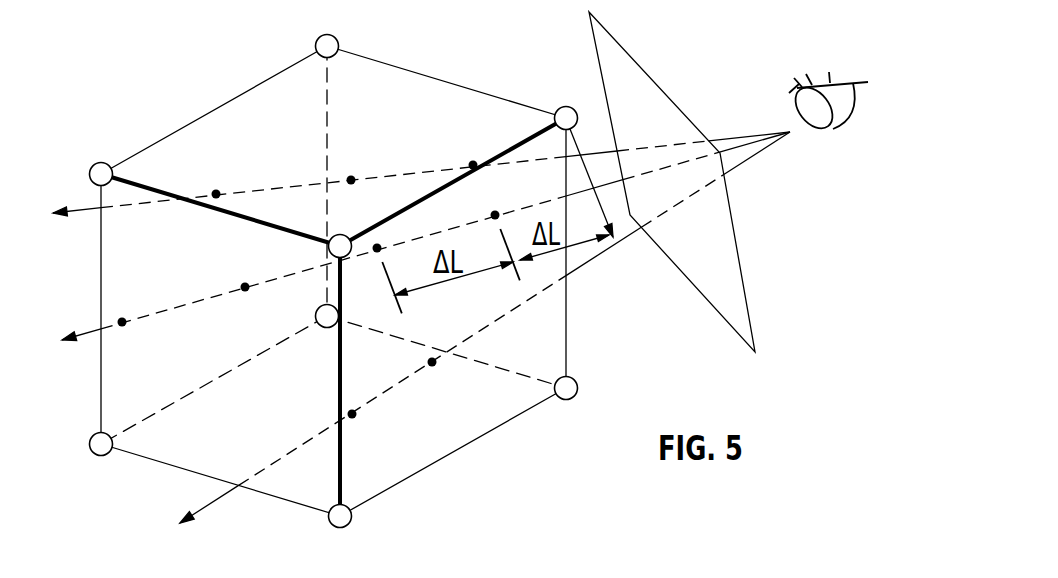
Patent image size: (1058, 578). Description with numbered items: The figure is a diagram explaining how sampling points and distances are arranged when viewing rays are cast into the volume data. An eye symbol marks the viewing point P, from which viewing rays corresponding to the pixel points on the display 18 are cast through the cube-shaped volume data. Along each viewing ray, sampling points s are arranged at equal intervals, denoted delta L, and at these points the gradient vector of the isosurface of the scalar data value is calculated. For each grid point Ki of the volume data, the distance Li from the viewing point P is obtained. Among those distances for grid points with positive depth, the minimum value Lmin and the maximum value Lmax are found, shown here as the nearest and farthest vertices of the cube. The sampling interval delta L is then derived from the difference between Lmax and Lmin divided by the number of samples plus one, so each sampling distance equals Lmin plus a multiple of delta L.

The display 18 is at (787, 238).
The viewing point P is at (828, 112).
The minimum value of distance Li Lmin is at (560, 99).
The maximum value of distance Li Lmax is at (100, 468).
The grid point Ki is at (583, 393).
The distance Li is at (603, 218).
The sampling point s is at (432, 366).